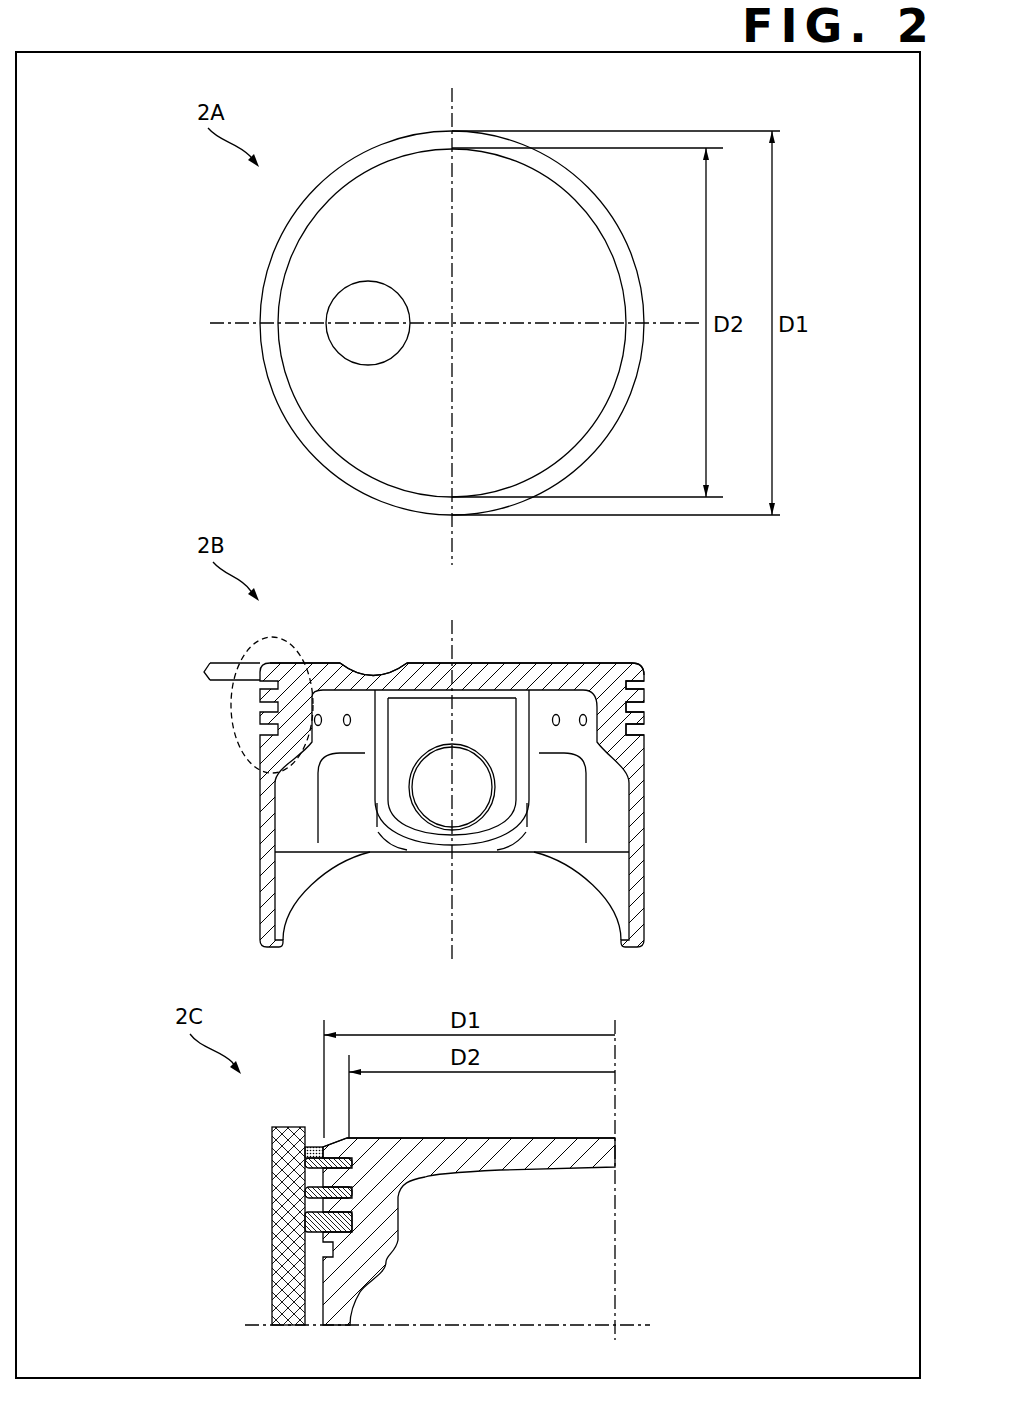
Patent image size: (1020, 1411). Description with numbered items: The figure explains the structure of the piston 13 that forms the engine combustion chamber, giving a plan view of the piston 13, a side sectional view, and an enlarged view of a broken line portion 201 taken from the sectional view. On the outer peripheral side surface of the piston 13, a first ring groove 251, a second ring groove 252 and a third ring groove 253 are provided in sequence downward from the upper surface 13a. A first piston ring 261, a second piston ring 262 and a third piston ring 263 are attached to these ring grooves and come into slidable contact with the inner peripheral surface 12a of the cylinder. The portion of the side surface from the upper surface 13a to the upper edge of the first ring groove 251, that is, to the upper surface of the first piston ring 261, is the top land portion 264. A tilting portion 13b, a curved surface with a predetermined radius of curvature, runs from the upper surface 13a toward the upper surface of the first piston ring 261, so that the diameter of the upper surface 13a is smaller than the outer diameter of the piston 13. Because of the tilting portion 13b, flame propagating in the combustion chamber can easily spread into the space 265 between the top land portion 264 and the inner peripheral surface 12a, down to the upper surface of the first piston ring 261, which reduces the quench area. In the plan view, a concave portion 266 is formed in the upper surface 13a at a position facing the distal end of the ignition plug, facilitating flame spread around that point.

The piston 13 is at (370, 148).
The upper surface 13a is at (600, 260).
The tilting portion 13b is at (640, 665).
The concave portion 266 is at (368, 366).
The top land portion 264 is at (207, 675).
The broken line portion 201 is at (238, 735).
The first ring groove 251 is at (645, 685).
The second ring groove 252 is at (645, 707).
The third ring groove 253 is at (645, 729).
The first piston ring 261 is at (305, 1163).
The second piston ring 262 is at (305, 1193).
The third piston ring 263 is at (305, 1222).
The space 265 is at (305, 1152).
The inner peripheral surface 12a is at (275, 1290).